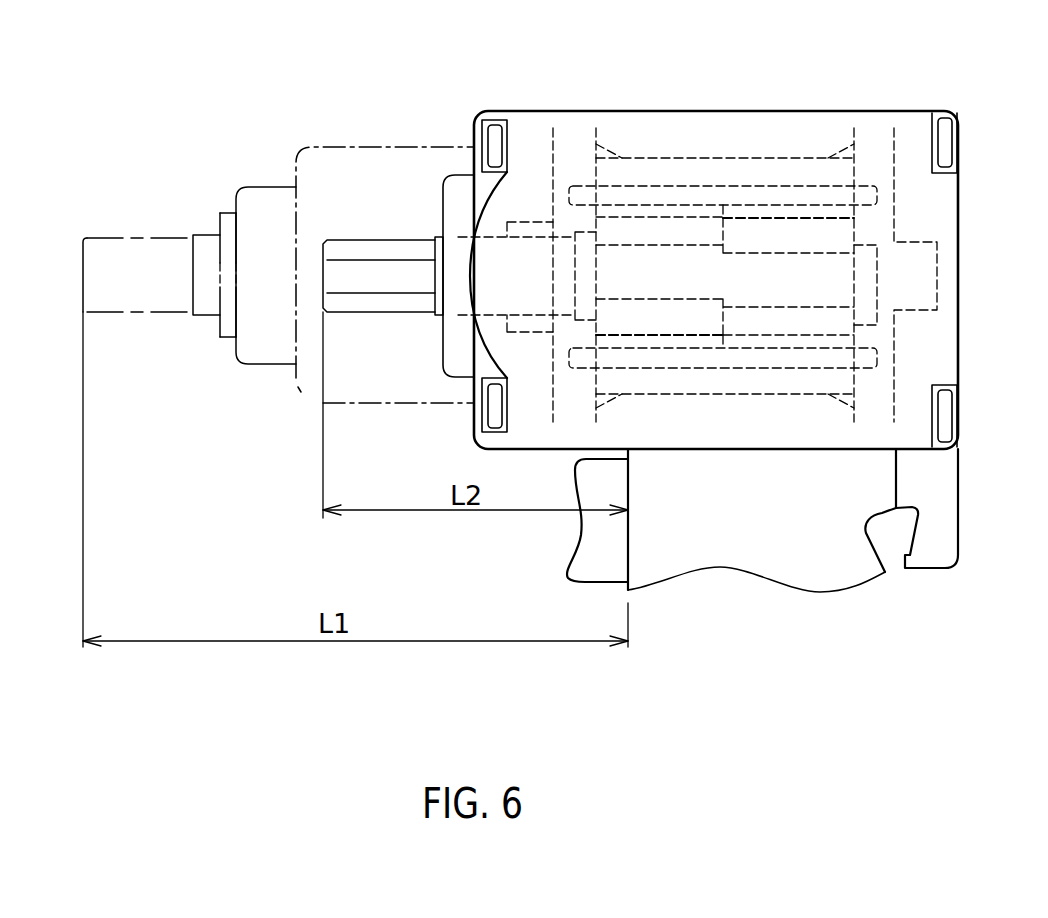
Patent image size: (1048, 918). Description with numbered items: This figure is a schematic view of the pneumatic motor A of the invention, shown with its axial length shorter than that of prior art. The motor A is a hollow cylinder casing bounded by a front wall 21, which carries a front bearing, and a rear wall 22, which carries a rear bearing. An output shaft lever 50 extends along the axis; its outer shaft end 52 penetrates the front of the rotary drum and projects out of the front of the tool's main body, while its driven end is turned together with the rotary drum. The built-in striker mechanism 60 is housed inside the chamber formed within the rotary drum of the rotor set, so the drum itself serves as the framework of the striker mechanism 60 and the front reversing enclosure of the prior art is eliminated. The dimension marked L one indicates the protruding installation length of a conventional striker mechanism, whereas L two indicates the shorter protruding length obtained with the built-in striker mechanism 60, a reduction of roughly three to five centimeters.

The pneumatic motor A is at (874, 129).
The front wall 21 is at (474, 168).
The rear wall 22 is at (959, 217).
The output shaft lever 50 is at (414, 236).
The outer shaft end 52 is at (360, 243).
The built-in striker mechanism 60 is at (715, 215).